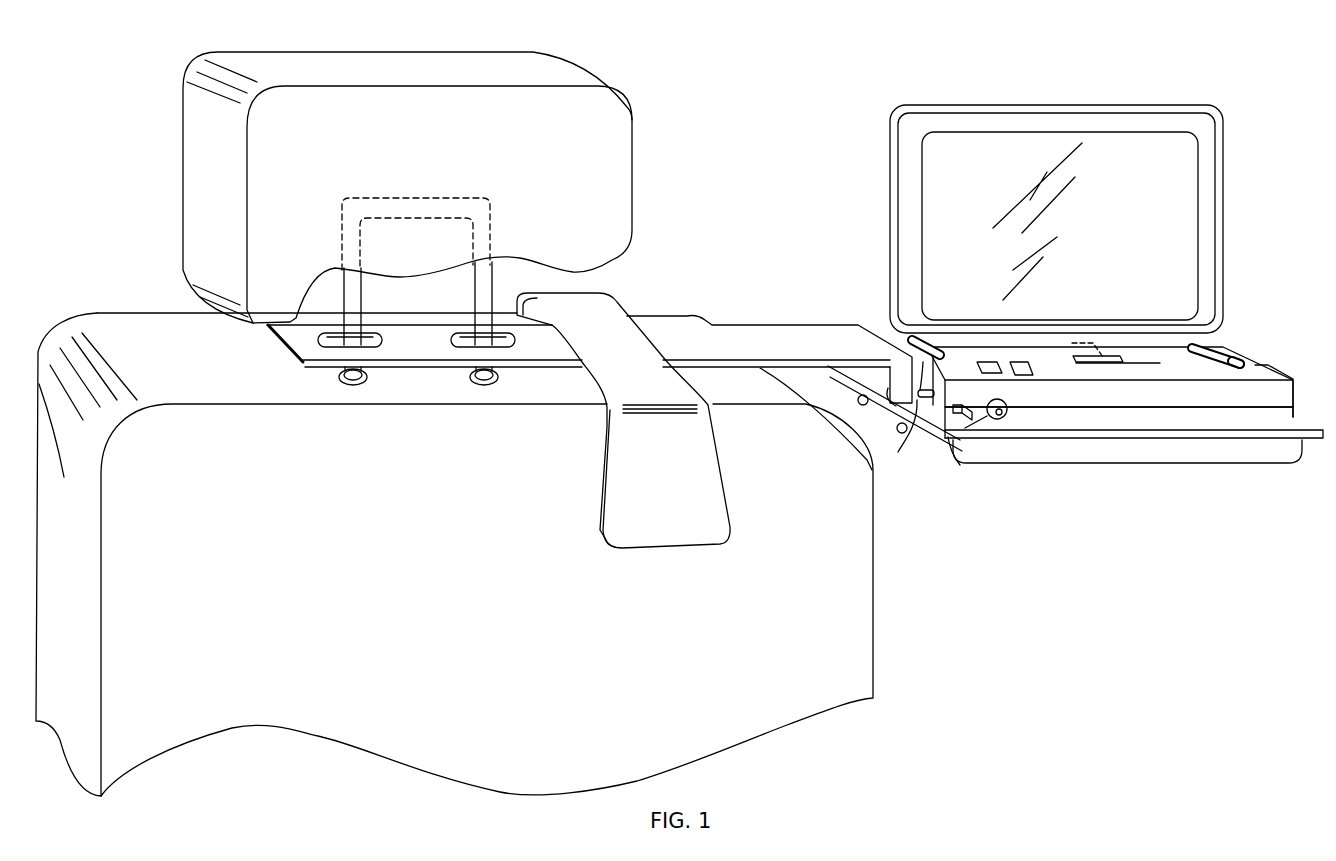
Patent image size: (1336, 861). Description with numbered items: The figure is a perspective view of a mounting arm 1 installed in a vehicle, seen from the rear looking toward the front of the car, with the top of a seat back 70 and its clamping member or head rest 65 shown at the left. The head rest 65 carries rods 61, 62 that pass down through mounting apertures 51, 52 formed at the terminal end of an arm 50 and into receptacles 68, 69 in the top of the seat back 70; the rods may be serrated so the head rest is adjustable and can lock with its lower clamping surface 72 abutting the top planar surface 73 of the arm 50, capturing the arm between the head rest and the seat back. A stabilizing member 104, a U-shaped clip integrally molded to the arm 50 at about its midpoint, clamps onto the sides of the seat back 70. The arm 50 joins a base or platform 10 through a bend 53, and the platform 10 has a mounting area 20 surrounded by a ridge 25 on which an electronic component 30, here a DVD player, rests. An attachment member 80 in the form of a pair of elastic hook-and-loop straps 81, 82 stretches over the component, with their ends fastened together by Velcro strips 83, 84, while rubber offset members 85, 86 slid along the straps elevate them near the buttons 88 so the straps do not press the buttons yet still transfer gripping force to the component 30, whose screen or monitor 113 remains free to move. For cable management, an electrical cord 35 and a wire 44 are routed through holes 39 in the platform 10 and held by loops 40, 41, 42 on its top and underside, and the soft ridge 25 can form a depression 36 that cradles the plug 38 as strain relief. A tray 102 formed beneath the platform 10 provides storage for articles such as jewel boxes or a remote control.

The mounting arm 1 is at (798, 315).
The base or platform 10 is at (1297, 417).
The mounting or support area 20 is at (1258, 427).
The ridge 25 is at (1177, 420).
The electronic component 30 is at (1273, 360).
The electrical cord or cable 35 is at (990, 425).
The depression 36 is at (1000, 420).
The plug 38 is at (1008, 415).
The holes 39 is at (937, 427).
The loop 40 is at (945, 425).
The loop 41 is at (893, 432).
The loop 42 is at (853, 400).
The wire 44 is at (895, 430).
The arm 50 is at (823, 323).
The mounting aperture 51 is at (318, 340).
The mounting aperture 52 is at (462, 345).
The bend 53 is at (893, 402).
The rod 61 is at (353, 308).
The rod 62 is at (490, 237).
The clamping member, upright member or head rest 65 is at (347, 68).
The receptacle 68 is at (366, 382).
The receptacle 69 is at (492, 382).
The support surface or seat back 70 is at (42, 340).
The lower clamping surface 72 is at (270, 330).
The top planar surface 73 is at (415, 337).
The attachment member 80 is at (1260, 372).
The strap 81 is at (1243, 355).
The strap 82 is at (960, 350).
The Velcro strip 83 is at (1140, 360).
The Velcro strip 84 is at (1073, 357).
The compression or offset member 85 is at (925, 345).
The compression or offset member 86 is at (1197, 343).
The buttons 88 is at (990, 360).
The tray 102 is at (955, 440).
The stabilizing member 104 is at (600, 393).
The screen or monitor 113 is at (893, 212).